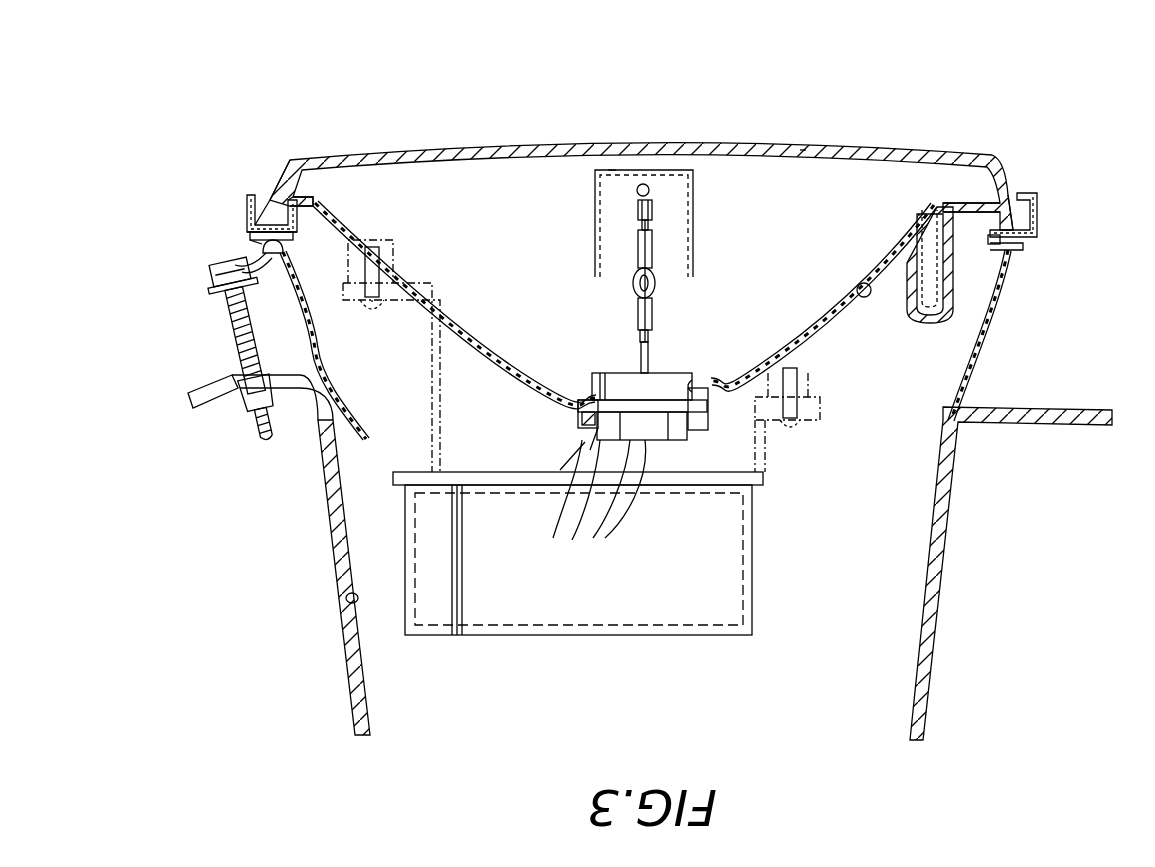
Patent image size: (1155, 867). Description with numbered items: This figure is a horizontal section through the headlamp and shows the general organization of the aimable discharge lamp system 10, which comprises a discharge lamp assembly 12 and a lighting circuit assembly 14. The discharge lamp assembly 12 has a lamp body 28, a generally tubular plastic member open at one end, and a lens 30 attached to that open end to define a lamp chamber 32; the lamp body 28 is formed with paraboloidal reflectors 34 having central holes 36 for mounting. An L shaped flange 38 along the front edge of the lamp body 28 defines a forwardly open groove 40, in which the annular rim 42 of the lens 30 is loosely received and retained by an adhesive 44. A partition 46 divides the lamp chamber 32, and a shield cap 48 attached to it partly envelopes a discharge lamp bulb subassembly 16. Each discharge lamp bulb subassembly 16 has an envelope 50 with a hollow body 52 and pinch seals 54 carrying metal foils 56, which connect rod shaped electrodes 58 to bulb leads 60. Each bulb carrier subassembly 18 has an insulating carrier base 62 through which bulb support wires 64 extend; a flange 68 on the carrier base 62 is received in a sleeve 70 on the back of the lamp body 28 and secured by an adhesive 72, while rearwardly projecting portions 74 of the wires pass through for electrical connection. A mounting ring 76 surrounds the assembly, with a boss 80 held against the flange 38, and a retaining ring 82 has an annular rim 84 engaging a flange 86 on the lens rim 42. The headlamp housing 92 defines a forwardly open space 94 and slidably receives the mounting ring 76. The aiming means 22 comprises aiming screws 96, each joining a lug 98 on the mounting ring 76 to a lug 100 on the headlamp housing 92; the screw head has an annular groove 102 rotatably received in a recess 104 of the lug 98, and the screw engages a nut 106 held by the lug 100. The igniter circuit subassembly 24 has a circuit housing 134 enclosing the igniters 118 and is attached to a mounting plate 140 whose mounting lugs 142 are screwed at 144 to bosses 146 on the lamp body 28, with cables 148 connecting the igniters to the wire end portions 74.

The discharge lamp system 10 is at (984, 104).
The discharge lamp assembly 12 is at (866, 134).
The lighting circuit assembly 14 is at (590, 600).
The discharge lamp bulb subassembly 16 is at (633, 219).
The bulb carrier subassembly 18 is at (639, 225).
The aiming means 22 is at (183, 347).
The igniter circuit subassembly 24 is at (718, 636).
The lamp body 28 is at (800, 376).
The lens 30 is at (517, 145).
The lamp chamber 32 is at (866, 300).
The paraboloidal reflector 34 is at (840, 302).
The hole 36 is at (700, 382).
The L shaped flange 38 is at (248, 222).
The groove 40 is at (283, 248).
The annular rim 42 is at (285, 152).
The adhesive 44 is at (304, 200).
The partition 46 is at (806, 170).
The shield cap 48 is at (612, 168).
The envelope 50 is at (640, 286).
The hollow body 52 is at (654, 280).
The pinch seal 54 is at (636, 222).
The metal foil 56 is at (636, 250).
The electrode 58 is at (636, 270).
The bulb lead 60 is at (652, 222).
The carrier base 62 is at (600, 378).
The bulb support wire 64 is at (660, 166).
The flange 68 is at (578, 404).
The sleeve 70 is at (708, 406).
The adhesive 72 is at (586, 426).
The rearwardly projecting portion 74 is at (664, 428).
The mounting ring 76 is at (1005, 328).
The boss 80 is at (258, 240).
The retaining ring 82 is at (252, 212).
The annular rim 84 is at (266, 196).
The flange 86 is at (276, 193).
The headlamp housing 92 is at (332, 630).
The forwardly open space 94 is at (346, 598).
The aiming screw 96 is at (238, 326).
The lug 98 is at (208, 286).
The lug 100 is at (226, 410).
The annular groove 102 is at (246, 262).
The recess 104 is at (216, 266).
The nut 106 is at (228, 380).
The igniter 118 is at (650, 628).
The circuit housing 134 is at (490, 638).
The mounting plate 140 is at (421, 472).
The mounting lug 142 is at (386, 304).
The screw 144 is at (368, 306).
The boss 146 is at (395, 245).
The cable 148 is at (599, 501).